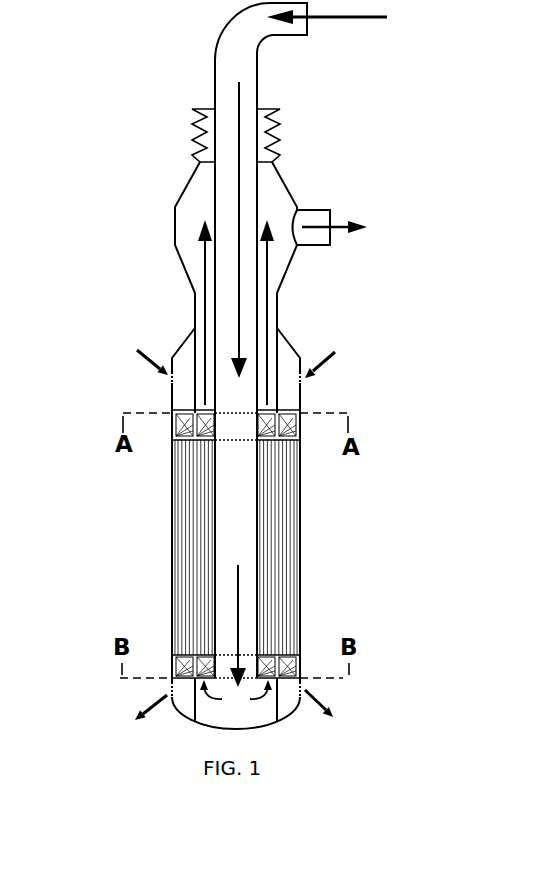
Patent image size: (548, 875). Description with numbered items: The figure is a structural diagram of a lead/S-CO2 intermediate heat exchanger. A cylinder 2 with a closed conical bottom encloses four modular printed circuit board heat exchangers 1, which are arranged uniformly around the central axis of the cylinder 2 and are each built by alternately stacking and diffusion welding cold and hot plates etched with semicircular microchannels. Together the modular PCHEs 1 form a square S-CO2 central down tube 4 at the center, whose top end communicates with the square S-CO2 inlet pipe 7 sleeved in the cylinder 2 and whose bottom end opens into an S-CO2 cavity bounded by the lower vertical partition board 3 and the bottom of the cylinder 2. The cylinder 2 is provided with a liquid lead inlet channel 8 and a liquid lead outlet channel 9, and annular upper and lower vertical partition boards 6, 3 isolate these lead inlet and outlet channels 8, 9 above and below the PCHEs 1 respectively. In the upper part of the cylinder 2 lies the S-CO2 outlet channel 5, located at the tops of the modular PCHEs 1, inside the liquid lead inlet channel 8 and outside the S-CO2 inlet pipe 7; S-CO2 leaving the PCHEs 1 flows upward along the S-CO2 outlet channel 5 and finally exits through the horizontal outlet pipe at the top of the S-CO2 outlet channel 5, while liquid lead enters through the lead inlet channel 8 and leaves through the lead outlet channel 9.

The modular printed circuit board heat exchanger 1 is at (278, 518).
The cylinder 2 is at (172, 533).
The lower vertical partition board 3 is at (275, 700).
The square S-CO2 central down tube 4 is at (238, 470).
The S-CO2 outlet channel 5 is at (272, 262).
The upper vertical partition board 6 is at (195, 392).
The S-CO2 inlet pipe 7 is at (267, 42).
The lead inlet channel 8 is at (187, 362).
The lead outlet channel 9 is at (180, 690).